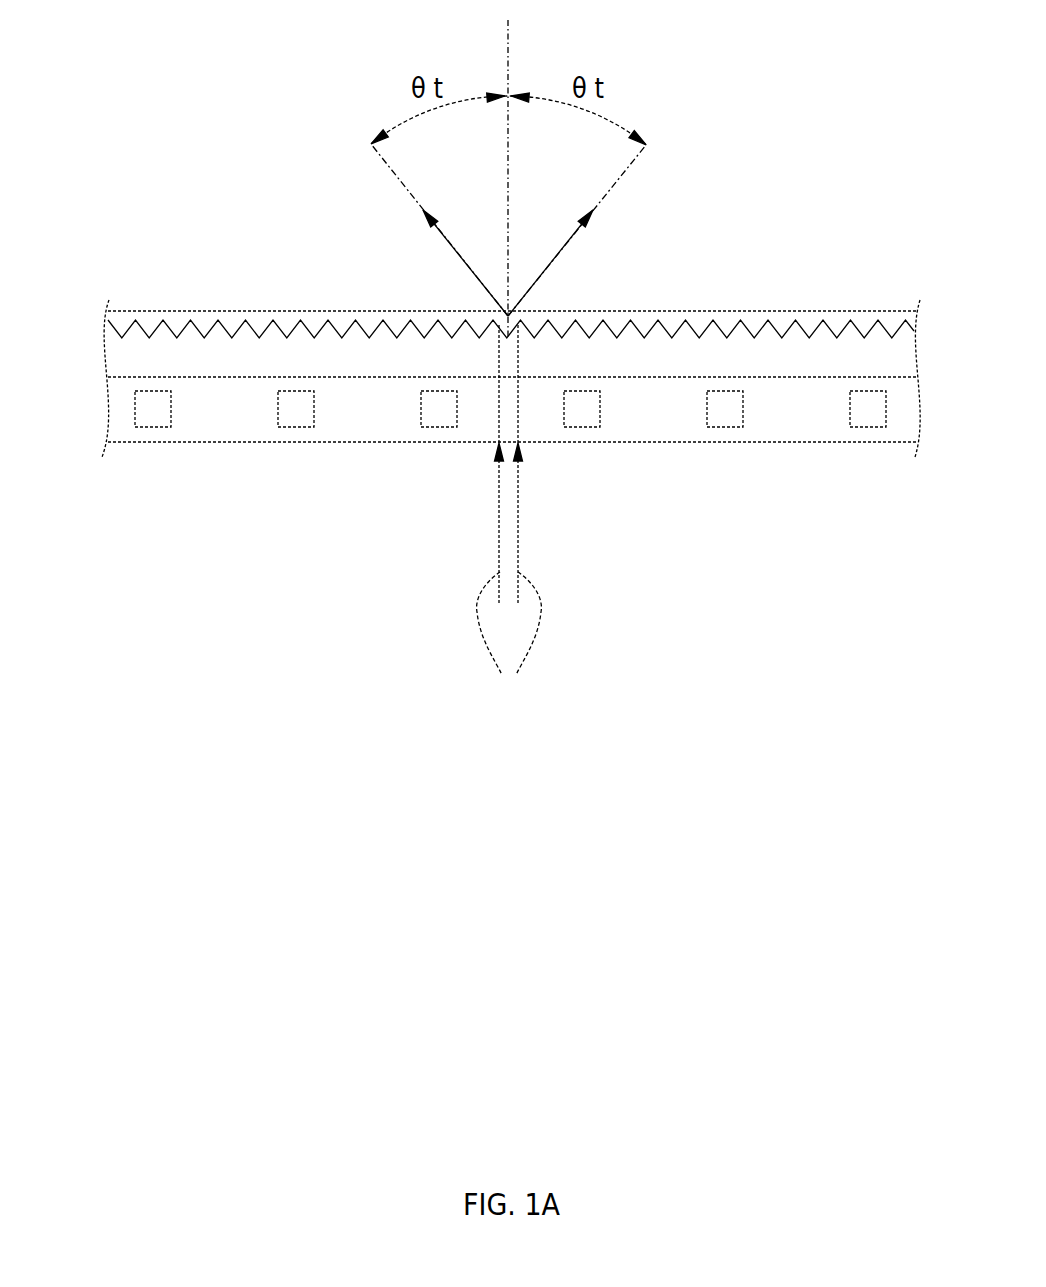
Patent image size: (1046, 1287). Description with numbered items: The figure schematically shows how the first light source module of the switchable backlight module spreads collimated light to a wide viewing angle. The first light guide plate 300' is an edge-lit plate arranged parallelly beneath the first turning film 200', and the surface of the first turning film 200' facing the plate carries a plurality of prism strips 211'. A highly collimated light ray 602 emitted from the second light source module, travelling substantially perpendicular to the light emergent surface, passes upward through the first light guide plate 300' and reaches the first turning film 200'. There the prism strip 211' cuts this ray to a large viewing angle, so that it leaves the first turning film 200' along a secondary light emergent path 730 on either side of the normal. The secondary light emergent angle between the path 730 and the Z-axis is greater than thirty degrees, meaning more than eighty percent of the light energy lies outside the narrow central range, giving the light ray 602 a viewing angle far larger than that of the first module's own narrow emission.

The first turning film 200' is at (495, 279).
The prism strip 211' is at (511, 262).
The first light guide plate 300' is at (495, 484).
The secondary light emergent path 730 is at (388, 170).
The light ray 602 is at (509, 517).